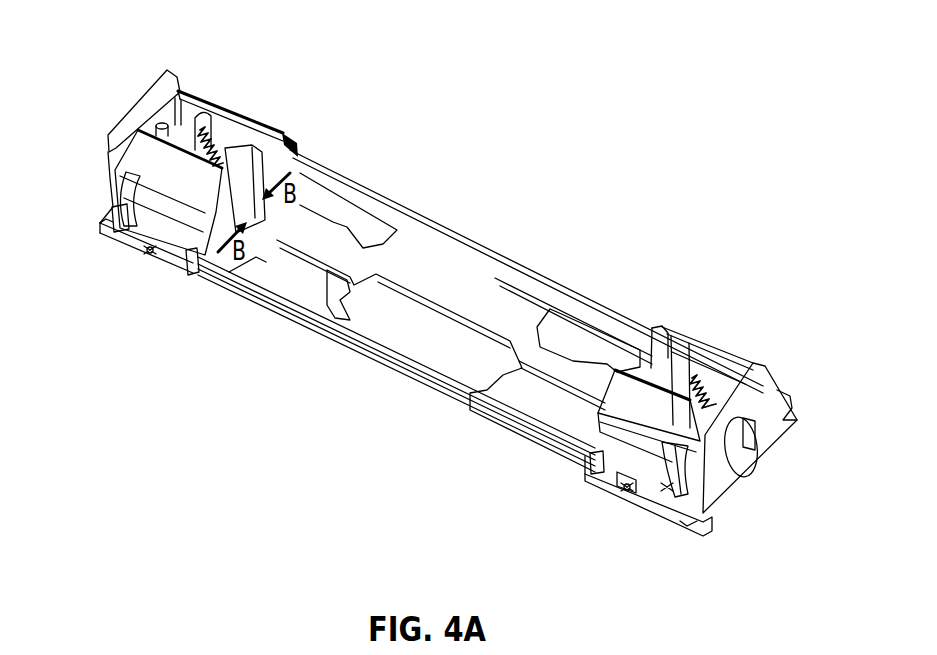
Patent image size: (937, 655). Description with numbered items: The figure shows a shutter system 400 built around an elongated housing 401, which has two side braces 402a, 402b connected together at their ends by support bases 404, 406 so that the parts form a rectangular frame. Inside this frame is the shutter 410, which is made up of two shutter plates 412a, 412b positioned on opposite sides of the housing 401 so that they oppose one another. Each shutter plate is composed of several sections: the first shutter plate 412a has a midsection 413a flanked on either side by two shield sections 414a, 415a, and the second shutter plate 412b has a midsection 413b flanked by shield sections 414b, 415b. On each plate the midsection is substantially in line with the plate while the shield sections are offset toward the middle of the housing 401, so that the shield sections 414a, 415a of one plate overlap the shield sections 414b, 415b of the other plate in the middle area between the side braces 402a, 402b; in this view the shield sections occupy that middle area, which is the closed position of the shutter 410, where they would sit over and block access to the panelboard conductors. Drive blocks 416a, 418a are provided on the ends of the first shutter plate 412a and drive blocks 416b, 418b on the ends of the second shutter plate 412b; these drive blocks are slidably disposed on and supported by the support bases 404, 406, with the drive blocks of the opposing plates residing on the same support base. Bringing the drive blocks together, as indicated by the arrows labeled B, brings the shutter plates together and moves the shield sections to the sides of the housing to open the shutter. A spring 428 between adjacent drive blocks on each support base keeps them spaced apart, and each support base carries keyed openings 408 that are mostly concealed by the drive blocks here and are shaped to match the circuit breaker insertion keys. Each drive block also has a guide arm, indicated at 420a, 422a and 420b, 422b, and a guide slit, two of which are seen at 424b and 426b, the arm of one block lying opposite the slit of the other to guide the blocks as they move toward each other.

The shutter system 400 is at (593, 136).
The elongated housing 401 is at (240, 334).
The side brace 402a is at (548, 303).
The side brace 402b is at (380, 372).
The support base 404 is at (130, 251).
The support base 406 is at (595, 484).
The keyed opening 408 is at (147, 253).
The shutter 410 is at (423, 245).
The first shutter plate 412a is at (484, 281).
The second shutter plate 412b is at (445, 337).
The midsection 413a is at (502, 290).
The midsection 413b is at (440, 378).
The shield section 414a is at (335, 247).
The shield section 414b is at (310, 263).
The shield section 415a is at (573, 367).
The shield section 415b is at (558, 383).
The drive block 416a is at (214, 96).
The drive block 416b is at (128, 160).
The drive block 418a is at (722, 358).
The drive block 418b is at (676, 430).
The guide arm 420a is at (168, 72).
The guide arm 420b is at (243, 144).
The guide arm 422a is at (760, 366).
The guide arm 422b is at (664, 330).
The guide slit 424b is at (128, 204).
The guide slit 426b is at (700, 516).
The spring 428 is at (198, 118).